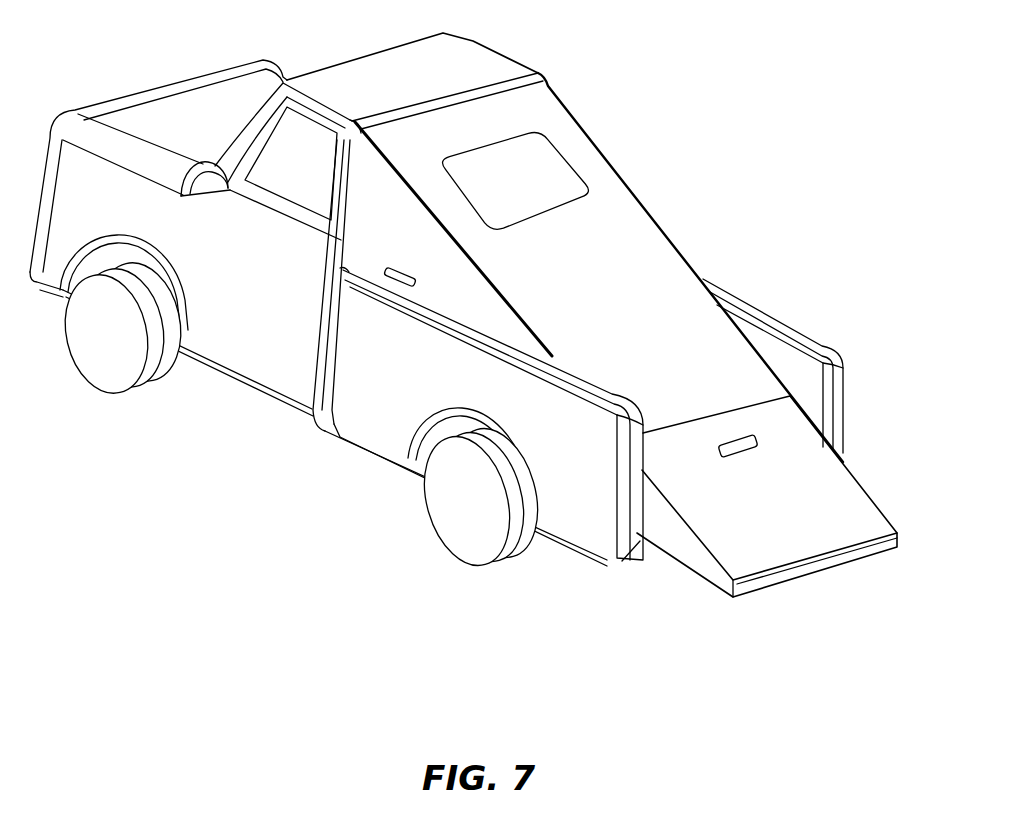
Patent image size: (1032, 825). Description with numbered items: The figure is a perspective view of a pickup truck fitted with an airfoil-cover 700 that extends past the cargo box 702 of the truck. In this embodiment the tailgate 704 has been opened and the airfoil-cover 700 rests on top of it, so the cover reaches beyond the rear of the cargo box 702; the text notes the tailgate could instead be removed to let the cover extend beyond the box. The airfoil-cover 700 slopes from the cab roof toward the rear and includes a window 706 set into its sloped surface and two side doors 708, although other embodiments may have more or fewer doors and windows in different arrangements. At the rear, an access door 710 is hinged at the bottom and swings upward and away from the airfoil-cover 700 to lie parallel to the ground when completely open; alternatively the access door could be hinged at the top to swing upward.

The airfoil-cover 700 is at (708, 347).
The cargo box 702 is at (388, 420).
The tailgate 704 is at (690, 598).
The window 706 is at (566, 168).
The side door 708 is at (372, 245).
The access door 710 is at (795, 551).